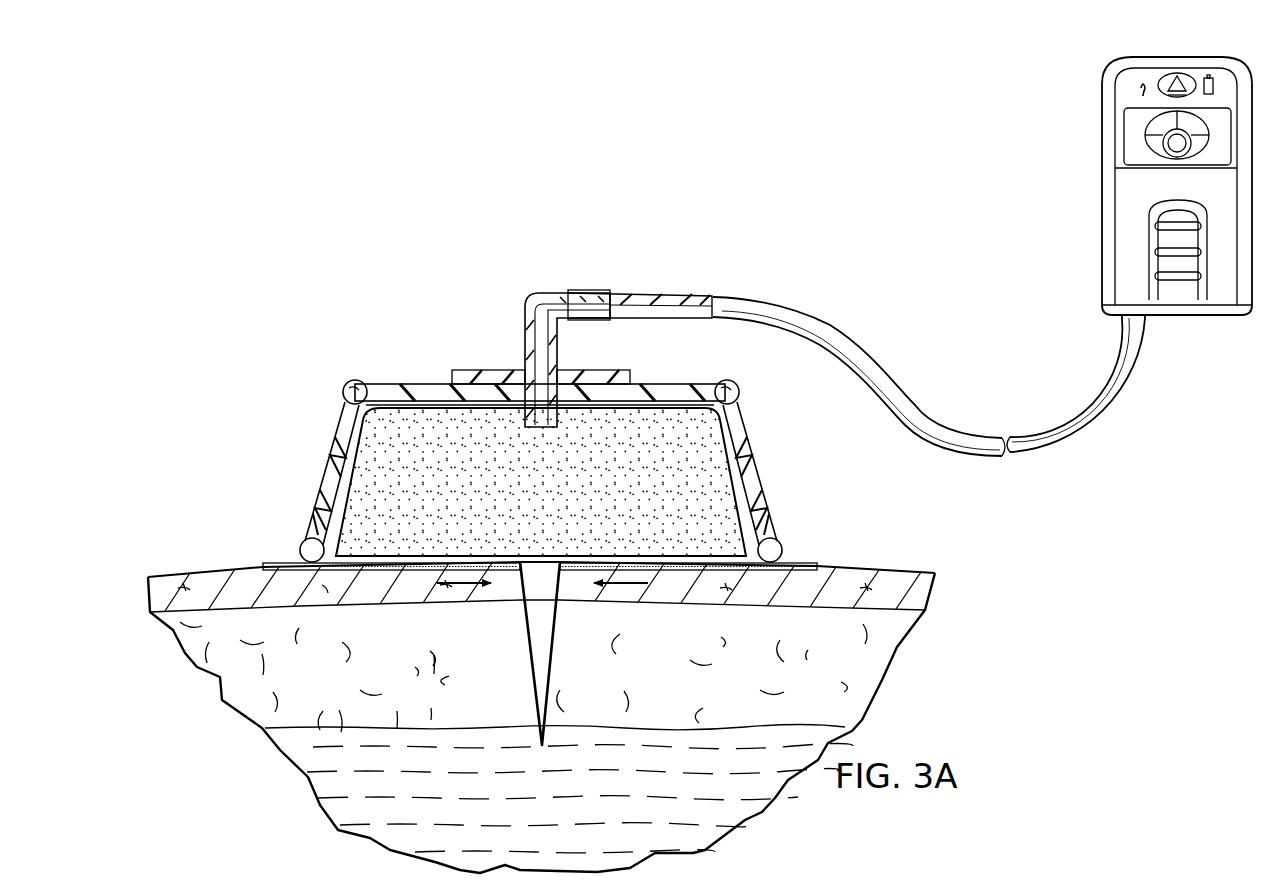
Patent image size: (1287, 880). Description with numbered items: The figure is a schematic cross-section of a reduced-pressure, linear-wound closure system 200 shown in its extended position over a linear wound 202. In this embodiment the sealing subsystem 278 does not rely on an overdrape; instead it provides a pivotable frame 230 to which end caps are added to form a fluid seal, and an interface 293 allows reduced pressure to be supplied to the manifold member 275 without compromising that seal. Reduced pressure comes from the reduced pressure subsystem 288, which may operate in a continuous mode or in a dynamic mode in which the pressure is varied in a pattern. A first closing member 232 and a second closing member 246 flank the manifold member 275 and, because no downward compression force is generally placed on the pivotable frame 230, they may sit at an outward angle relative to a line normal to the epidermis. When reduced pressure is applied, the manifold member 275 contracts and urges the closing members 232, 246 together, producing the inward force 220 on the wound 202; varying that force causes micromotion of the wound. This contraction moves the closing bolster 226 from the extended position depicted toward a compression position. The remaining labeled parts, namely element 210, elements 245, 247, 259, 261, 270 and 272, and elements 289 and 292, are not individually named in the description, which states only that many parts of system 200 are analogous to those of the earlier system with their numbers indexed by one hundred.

The reduced-pressure, linear-wound closure system 200 is at (372, 176).
The linear wound 202 is at (529, 654).
The tissue site 210 is at (937, 594).
The inward force 220 is at (449, 596).
The closing bolster 226 is at (410, 382).
The pivotable frame 230 is at (745, 416).
The first closing member 232 is at (322, 470).
The first lower hinge 245 is at (284, 564).
The second closing member 246 is at (760, 478).
The first base strip 247 is at (265, 567).
The second lower hinge 259 is at (800, 562).
The second base strip 261 is at (818, 568).
The first upper hinge 270 is at (349, 384).
The second upper hinge 272 is at (736, 386).
The manifold member 275 is at (521, 490).
The sealing subsystem 278 is at (306, 422).
The reduced pressure subsystem 288 is at (1092, 186).
The housing 289 is at (1100, 106).
The conduit 292 is at (700, 294).
The interface 293 is at (586, 292).